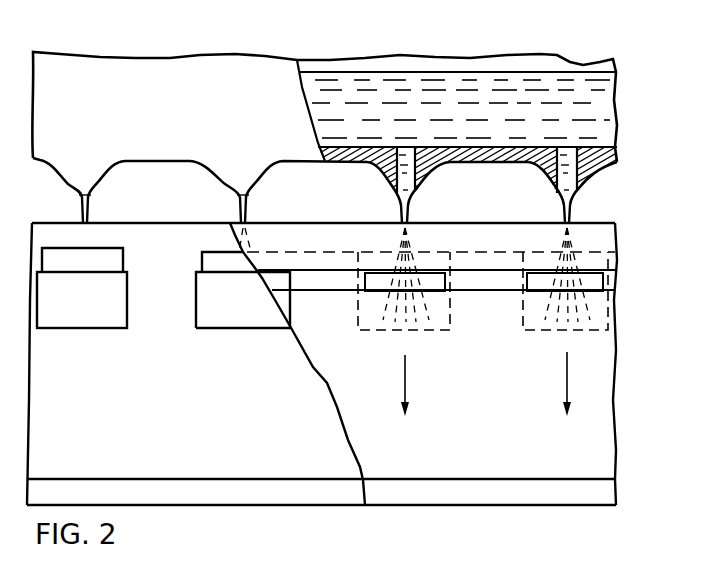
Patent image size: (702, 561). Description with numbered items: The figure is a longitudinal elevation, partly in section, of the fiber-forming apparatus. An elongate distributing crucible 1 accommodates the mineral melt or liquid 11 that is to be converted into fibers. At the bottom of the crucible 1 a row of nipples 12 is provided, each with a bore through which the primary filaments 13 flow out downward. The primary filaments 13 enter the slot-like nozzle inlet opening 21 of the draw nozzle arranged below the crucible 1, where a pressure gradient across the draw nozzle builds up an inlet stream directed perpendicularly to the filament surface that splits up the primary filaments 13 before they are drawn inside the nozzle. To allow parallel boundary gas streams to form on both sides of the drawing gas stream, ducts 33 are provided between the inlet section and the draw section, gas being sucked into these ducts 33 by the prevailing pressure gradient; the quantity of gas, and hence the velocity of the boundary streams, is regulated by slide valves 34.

The distributing crucible 1 is at (93, 72).
The liquid 11 is at (593, 100).
The nipples 12 is at (108, 174).
The primary filaments 13 is at (93, 201).
The nozzle inlet opening 21 is at (497, 245).
The ducts 33 is at (117, 259).
The slide valves 34 is at (117, 293).